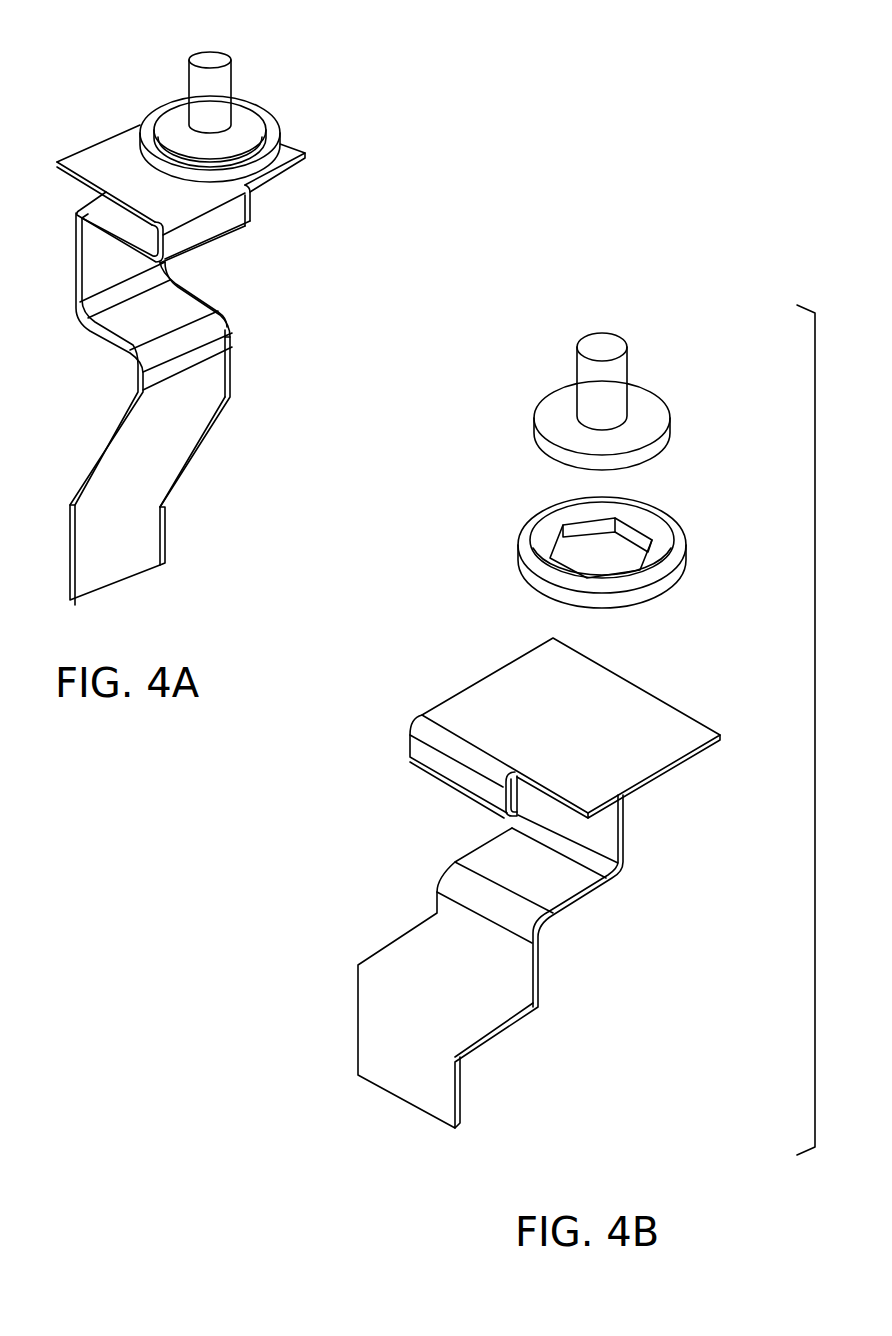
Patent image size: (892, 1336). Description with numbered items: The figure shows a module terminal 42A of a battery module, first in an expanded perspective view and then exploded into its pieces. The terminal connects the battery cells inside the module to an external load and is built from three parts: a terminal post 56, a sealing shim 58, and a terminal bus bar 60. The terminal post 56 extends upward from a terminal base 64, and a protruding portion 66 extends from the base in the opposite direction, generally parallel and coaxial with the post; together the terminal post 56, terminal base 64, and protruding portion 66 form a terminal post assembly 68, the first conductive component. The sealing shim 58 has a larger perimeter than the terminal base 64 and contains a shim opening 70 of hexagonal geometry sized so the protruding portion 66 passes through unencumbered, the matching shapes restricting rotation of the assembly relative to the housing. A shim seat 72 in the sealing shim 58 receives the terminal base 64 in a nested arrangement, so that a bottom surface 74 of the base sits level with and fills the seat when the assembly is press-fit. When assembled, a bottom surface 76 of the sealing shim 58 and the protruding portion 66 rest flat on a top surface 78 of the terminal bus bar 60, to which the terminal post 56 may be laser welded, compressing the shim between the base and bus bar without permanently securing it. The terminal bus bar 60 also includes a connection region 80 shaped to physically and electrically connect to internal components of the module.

In FIG. 4A, the first module terminal 42A is at (214, 43).
In FIG. 4B, the first module terminal 42A is at (603, 323).
In FIG. 4A, the terminal post 56 is at (233, 78).
In FIG. 4B, the terminal post 56 is at (628, 365).
In FIG. 4A, the sealing shim 58 is at (275, 137).
In FIG. 4B, the sealing shim 58 is at (604, 576).
In FIG. 4A, the terminal bus bar 60 is at (243, 308).
In FIG. 4B, the terminal bus bar 60 is at (708, 690).
In FIG. 4B, the terminal base 64 is at (648, 415).
In FIG. 4B, the protruding portion 66 is at (569, 466).
In FIG. 4B, the terminal post assembly 68 is at (594, 407).
In FIG. 4B, the shim opening 70 is at (622, 553).
In FIG. 4B, the shim seat 72 is at (543, 555).
In FIG. 4B, the bottom surface of the terminal base 74 is at (641, 462).
In FIG. 4B, the bottom surface of the sealing shim 76 is at (617, 613).
In FIG. 4B, the top surface of the terminal bus bar 78 is at (632, 762).
In FIG. 4B, the connection region 80 is at (595, 921).